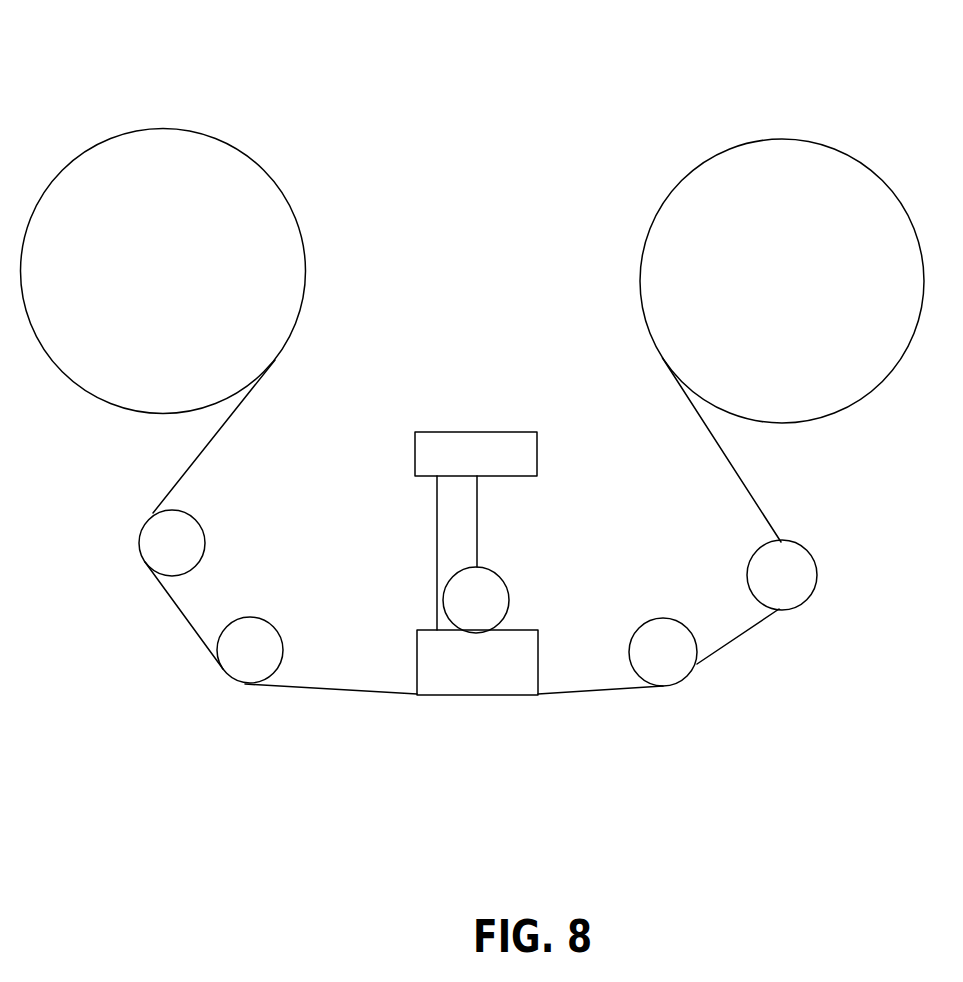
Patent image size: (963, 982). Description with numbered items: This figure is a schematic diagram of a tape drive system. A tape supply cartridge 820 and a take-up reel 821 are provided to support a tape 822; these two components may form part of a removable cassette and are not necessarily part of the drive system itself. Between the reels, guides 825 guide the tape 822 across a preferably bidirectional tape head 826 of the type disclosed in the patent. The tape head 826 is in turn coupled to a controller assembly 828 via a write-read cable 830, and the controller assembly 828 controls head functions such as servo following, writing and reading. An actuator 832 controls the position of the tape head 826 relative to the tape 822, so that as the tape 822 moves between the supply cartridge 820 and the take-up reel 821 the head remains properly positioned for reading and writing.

The tape supply cartridge 820 is at (161, 128).
The take-up reel 821 is at (782, 140).
The tape 822 is at (337, 692).
The guides 825 is at (205, 540).
The tape head 826 is at (538, 658).
The controller assembly 828 is at (473, 432).
The write-read cable 830 is at (437, 597).
The actuator 832 is at (500, 575).